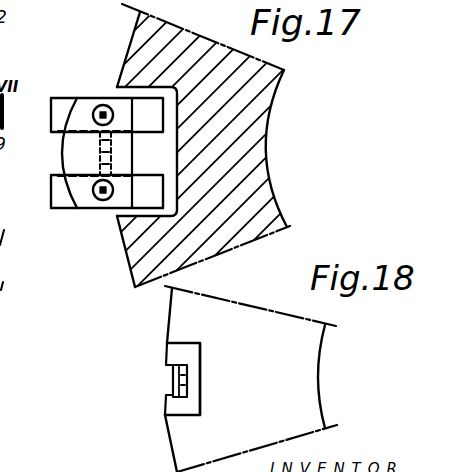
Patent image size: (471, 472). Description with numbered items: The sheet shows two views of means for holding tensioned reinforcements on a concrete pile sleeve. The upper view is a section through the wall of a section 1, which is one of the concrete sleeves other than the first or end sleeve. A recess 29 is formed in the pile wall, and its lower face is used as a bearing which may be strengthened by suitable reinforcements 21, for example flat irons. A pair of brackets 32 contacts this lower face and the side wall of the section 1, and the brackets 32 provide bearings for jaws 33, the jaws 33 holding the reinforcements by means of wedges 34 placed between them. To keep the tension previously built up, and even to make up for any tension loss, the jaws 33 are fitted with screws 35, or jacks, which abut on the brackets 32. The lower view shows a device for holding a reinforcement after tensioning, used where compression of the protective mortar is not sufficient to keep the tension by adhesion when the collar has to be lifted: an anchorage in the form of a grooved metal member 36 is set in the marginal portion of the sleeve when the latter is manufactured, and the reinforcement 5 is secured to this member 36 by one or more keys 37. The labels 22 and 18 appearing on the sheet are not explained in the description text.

In FIG. 17, the sections 1 is at (240, 188).
In FIG. 18, the sections 1 is at (288, 402).
In FIG. 17, the recesses 29 is at (163, 142).
In FIG. 17, the brackets 32 is at (63, 107).
In FIG. 17, the jaws 33 is at (82, 197).
In FIG. 17, the wedges 34 is at (98, 140).
In FIG. 17, the screws 35 is at (103, 105).
In FIG. 17, the reinforcements 21 is at (56, 0).
In FIG. 17, the element 22 is at (96, 0).
In FIG. 17, the section line 18 is at (163, 0).
In FIG. 18, the reinforcements 5 is at (173, 368).
In FIG. 18, the grooved metal members 36 is at (184, 403).
In FIG. 18, the keys 37 is at (200, 377).